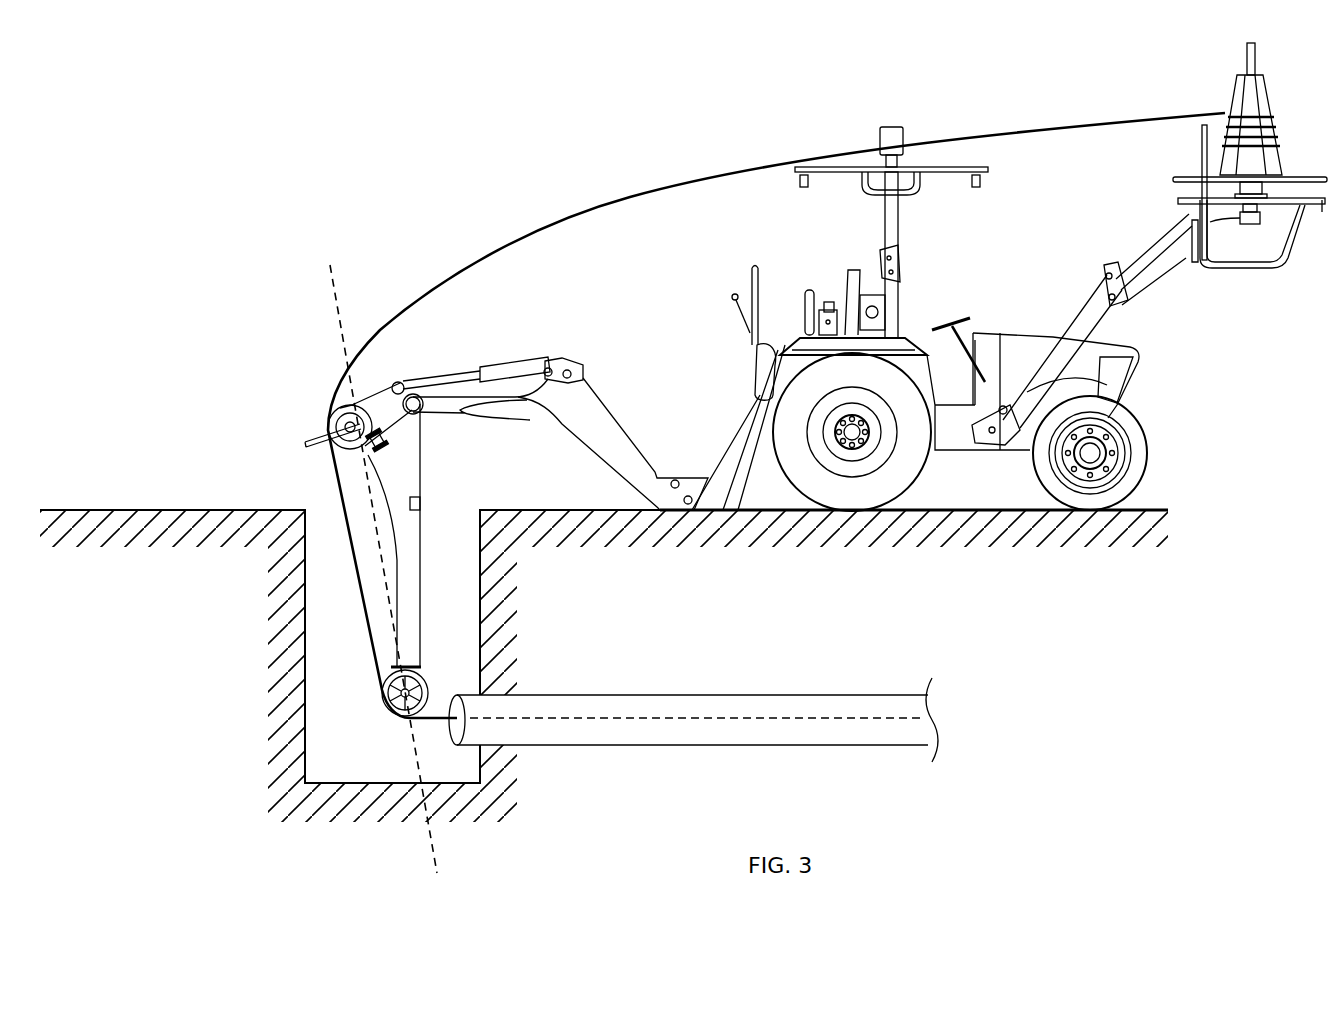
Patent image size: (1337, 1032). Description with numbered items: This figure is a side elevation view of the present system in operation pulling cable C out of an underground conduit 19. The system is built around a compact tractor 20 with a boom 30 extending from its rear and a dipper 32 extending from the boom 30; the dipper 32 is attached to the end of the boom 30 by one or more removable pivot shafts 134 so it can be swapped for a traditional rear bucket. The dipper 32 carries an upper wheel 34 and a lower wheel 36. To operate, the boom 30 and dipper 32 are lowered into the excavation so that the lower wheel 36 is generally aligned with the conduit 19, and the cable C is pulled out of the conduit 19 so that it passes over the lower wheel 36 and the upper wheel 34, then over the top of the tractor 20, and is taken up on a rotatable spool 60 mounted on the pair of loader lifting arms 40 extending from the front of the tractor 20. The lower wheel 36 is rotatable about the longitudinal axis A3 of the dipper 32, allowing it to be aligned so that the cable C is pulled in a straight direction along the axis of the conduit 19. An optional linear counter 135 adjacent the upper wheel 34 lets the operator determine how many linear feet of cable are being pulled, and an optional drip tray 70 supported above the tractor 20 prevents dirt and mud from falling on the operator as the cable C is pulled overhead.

The underground conduit 19 is at (636, 742).
The compact tractor 20 is at (1022, 318).
The boom 30 is at (606, 443).
The dipper 32 is at (404, 550).
The upper wheel 34 is at (336, 420).
The lower wheel 36 is at (388, 676).
The loader lifting arms 40 is at (1148, 282).
The rotatable spool 60 is at (1267, 100).
The drip tray 70 is at (990, 170).
The pivot shafts 134 is at (402, 380).
The linear counter 135 is at (392, 446).
The longitudinal axis A3 is at (330, 292).
The cable C is at (488, 248).